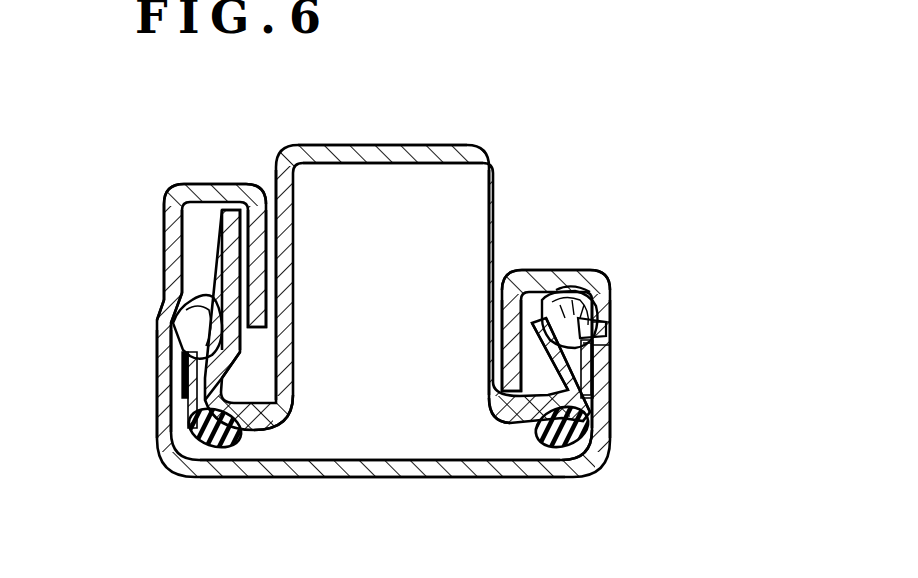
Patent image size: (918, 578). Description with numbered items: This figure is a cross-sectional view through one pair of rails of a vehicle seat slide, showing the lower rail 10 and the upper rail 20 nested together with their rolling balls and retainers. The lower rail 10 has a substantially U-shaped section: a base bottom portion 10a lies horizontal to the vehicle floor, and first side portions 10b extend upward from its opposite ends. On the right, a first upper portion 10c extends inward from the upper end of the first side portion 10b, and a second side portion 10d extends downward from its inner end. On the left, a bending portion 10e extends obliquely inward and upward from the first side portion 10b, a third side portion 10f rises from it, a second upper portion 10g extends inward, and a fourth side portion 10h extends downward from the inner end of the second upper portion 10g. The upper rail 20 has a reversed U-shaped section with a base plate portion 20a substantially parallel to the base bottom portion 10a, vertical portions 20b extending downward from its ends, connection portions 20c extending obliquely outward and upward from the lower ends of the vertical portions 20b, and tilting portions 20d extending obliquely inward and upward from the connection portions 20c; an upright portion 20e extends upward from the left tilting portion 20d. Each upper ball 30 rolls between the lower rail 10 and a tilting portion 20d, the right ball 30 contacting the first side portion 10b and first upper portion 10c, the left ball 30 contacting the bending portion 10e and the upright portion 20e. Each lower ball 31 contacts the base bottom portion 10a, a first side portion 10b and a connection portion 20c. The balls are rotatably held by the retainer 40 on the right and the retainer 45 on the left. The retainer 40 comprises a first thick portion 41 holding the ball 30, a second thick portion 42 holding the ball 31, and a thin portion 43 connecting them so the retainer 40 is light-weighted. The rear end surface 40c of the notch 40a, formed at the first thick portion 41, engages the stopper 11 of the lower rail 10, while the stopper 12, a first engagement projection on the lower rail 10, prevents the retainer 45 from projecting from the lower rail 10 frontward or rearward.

The lower rail 10 is at (437, 490).
The base bottom portion 10a is at (375, 479).
The first side portions 10b is at (160, 404).
The first upper portion 10c is at (531, 272).
The second side portion 10d is at (506, 350).
The bending portion 10e is at (160, 302).
The third side portion 10f is at (166, 245).
The second upper portion 10g is at (208, 184).
The fourth side portion 10h is at (255, 286).
The stopper 11 is at (612, 323).
The stopper 12 is at (178, 340).
The upper rail 20 is at (432, 140).
The base plate portion 20a is at (373, 153).
The vertical portions 20b is at (285, 233).
The connection portions 20c is at (286, 402).
The tilting portions 20d is at (222, 350).
The upright portion 20e is at (234, 287).
The ball 30 is at (185, 325).
The ball 31 is at (195, 446).
The retainer 40 is at (598, 378).
The notch 40a is at (606, 338).
The rear end surface 40c is at (592, 298).
The first thick portion 41 is at (577, 286).
The second thick portion 42 is at (590, 463).
The thin portion 43 is at (586, 357).
The retainer 45 is at (183, 383).